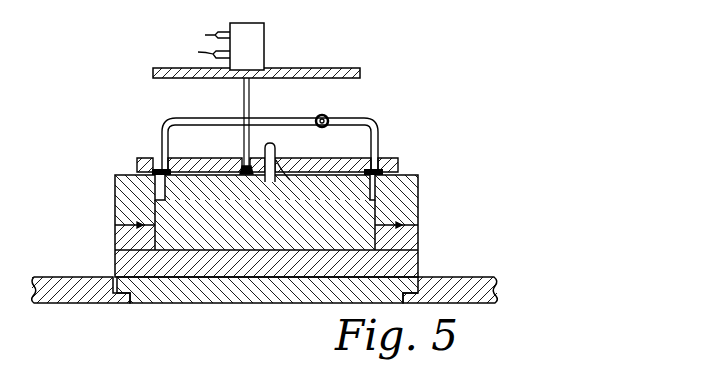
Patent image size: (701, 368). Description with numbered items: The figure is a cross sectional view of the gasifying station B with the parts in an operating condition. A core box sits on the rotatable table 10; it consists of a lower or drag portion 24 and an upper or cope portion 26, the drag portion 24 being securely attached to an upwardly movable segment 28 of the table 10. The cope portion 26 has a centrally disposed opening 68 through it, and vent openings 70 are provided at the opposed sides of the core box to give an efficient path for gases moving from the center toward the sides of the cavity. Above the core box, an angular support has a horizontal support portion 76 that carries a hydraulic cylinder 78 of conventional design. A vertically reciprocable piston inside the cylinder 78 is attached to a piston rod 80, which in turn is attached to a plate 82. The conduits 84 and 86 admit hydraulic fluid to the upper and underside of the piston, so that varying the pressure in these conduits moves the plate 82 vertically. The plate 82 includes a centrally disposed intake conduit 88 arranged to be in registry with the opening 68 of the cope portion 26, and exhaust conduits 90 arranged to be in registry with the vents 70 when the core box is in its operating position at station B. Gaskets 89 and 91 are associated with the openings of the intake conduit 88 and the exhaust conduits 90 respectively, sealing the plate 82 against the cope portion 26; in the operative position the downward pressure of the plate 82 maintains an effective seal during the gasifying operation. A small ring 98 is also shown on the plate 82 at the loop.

The table 10 is at (458, 280).
The drag portion 24 is at (407, 257).
The cope portion 26 is at (405, 194).
The upwardly movable segment 28 is at (182, 303).
The opening 68 is at (249, 174).
The vent openings 70 is at (142, 167).
The horizontal support portion 76 is at (311, 70).
The hydraulic cylinder 78 is at (237, 40).
The piston rod 80 is at (248, 126).
The plate 82 is at (281, 146).
The conduit 84 is at (204, 53).
The conduit 86 is at (226, 34).
The intake conduit 88 is at (276, 163).
The gasket 89 is at (296, 162).
The exhaust conduits 90 is at (164, 152).
The gasket 91 is at (166, 168).
The pivot ring 98 is at (326, 115).
The gasifying station B is at (108, 199).